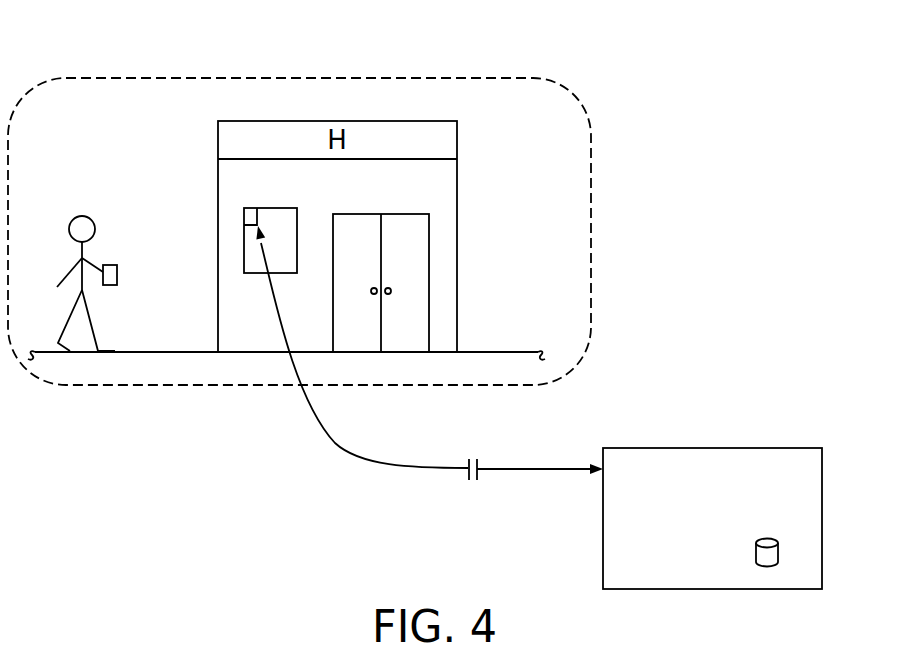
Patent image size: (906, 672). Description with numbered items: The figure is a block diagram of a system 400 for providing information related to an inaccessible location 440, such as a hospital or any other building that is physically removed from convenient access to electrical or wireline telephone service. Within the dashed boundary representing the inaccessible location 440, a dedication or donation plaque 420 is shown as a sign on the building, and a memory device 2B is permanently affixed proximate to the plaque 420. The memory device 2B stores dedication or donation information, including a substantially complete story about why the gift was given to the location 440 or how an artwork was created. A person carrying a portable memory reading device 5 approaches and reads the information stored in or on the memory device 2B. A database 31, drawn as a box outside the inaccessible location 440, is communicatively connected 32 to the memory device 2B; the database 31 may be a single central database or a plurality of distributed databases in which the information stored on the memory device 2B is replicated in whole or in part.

The system 400 is at (229, 45).
The inaccessible location 440 is at (215, 400).
The dedication or donation plaque 420 is at (302, 195).
The memory device 2B is at (240, 196).
The portable memory reading device 5 is at (110, 250).
The communicative connection 32 is at (506, 457).
The database 31 is at (787, 436).